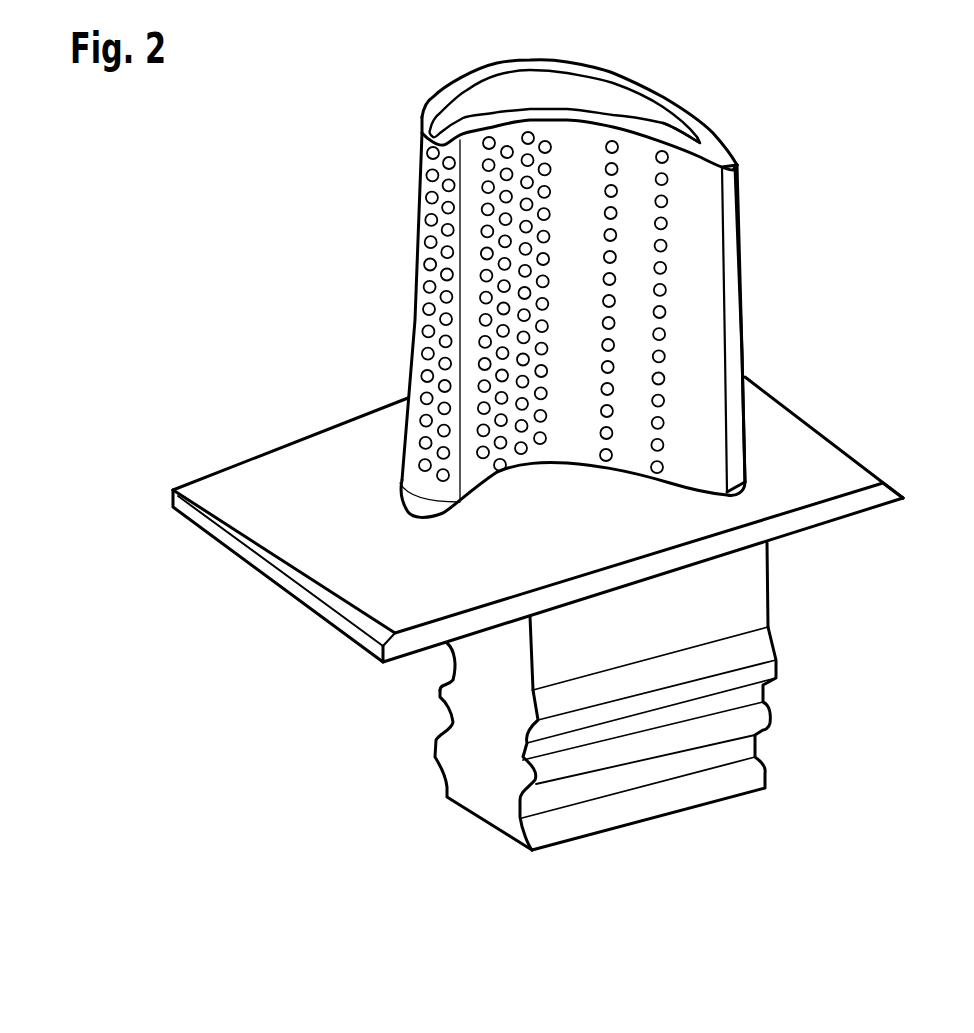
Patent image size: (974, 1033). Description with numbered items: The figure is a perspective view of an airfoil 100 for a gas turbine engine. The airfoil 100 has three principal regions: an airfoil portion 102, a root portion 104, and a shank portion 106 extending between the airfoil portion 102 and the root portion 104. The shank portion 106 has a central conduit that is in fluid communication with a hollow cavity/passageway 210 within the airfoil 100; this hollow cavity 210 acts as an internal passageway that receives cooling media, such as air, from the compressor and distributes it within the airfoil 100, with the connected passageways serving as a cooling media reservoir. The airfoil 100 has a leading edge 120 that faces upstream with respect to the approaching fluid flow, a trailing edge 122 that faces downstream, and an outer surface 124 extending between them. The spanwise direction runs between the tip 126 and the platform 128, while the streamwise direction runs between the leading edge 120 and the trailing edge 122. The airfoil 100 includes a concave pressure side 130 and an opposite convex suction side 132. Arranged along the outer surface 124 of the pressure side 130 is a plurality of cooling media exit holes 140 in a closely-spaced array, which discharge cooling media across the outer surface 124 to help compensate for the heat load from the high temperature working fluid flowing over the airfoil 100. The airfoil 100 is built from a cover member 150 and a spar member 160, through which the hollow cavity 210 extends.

The airfoil 100 is at (350, 106).
The airfoil portion 102 is at (418, 200).
The root portion 104 is at (755, 747).
The shank portion 106 is at (752, 578).
The leading edge 120 is at (418, 287).
The trailing edge 122 is at (745, 290).
The outer surface 124 is at (710, 320).
The tip 126 is at (603, 70).
The platform 128 is at (805, 440).
The pressure side 130 is at (703, 230).
The suction side 132 is at (662, 97).
The cooling media exit holes 140 is at (610, 342).
The cover member 150 is at (690, 153).
The spar member 160 is at (497, 67).
The hollow cavity/passageway 210 is at (532, 87).